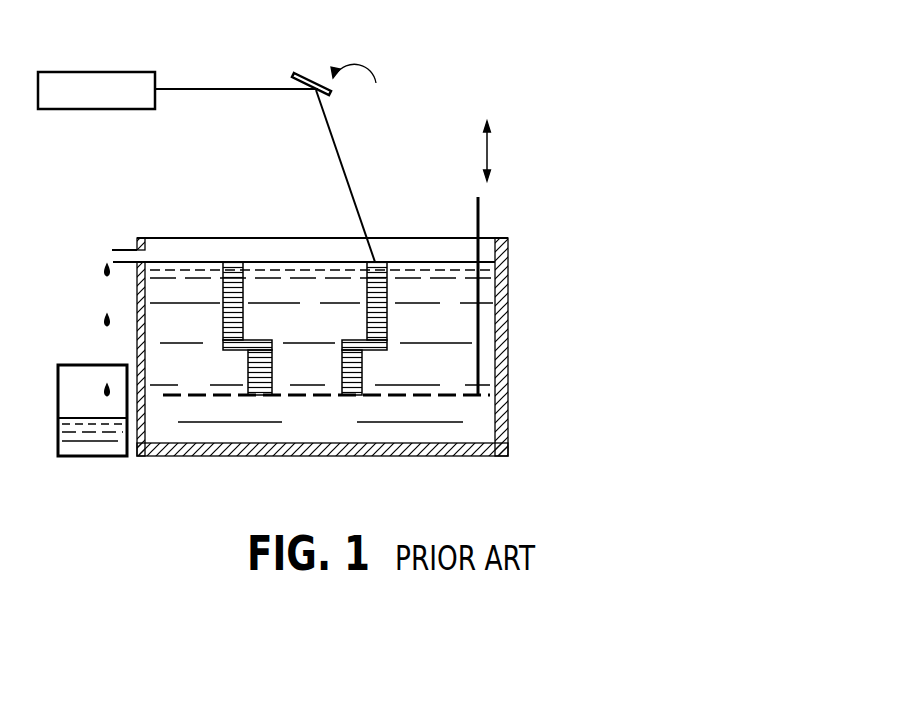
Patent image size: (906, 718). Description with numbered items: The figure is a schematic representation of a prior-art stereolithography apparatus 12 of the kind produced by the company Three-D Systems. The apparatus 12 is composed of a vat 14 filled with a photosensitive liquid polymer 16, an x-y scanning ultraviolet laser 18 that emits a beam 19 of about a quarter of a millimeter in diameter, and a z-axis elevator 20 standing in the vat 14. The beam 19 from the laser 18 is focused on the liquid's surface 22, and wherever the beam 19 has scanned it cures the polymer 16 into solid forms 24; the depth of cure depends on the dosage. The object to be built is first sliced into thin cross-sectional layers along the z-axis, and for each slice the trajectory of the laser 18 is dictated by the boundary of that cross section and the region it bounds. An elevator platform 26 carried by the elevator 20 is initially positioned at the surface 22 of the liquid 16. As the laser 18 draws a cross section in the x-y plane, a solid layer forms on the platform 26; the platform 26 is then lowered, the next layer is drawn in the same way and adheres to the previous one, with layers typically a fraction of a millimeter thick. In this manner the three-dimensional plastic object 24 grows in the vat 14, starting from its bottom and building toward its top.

The stereolithography apparatus 12 is at (481, 89).
The vat 14 is at (509, 342).
The photosensitive liquid polymer 16 is at (479, 410).
The ultraviolet laser 18 is at (156, 73).
The beam 19 is at (255, 88).
The z-axis elevator 20 is at (481, 220).
The liquid's surface 22 is at (422, 262).
The solid forms 24 is at (229, 287).
The elevator platform 26 is at (361, 396).